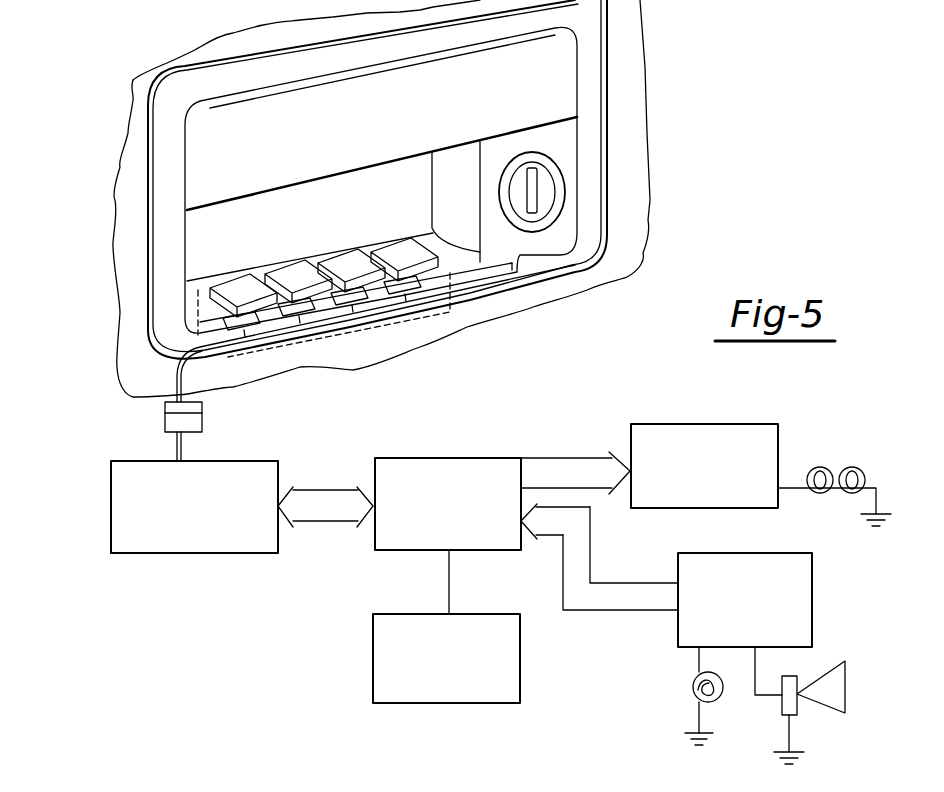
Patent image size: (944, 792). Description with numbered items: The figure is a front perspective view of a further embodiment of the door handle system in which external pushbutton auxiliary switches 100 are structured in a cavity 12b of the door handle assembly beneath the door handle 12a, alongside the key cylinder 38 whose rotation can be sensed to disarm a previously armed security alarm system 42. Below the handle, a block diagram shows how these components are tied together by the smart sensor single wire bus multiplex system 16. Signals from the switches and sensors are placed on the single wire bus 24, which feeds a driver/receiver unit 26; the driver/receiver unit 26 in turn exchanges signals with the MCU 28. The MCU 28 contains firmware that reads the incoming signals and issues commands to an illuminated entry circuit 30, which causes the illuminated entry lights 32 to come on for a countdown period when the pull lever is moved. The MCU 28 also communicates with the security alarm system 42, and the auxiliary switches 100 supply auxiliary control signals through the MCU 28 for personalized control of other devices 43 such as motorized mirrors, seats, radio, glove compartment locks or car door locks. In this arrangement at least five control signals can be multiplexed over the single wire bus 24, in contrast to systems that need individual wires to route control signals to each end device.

The door handle 12a is at (293, 183).
The cavity 12b is at (180, 236).
The auxiliary switches 100 is at (208, 277).
The key cylinder 38 is at (560, 164).
The single wire bus 24 is at (184, 445).
The driver/receiver (D/R) unit 26 is at (243, 461).
The smart sensor single wire bus multiplex system 16 is at (322, 467).
The MCU 28 is at (447, 458).
The illuminated entry circuit 30 is at (668, 424).
The illuminated entry lights 32 is at (806, 478).
The security alarm system 42 is at (698, 553).
The other devices 43 is at (454, 614).